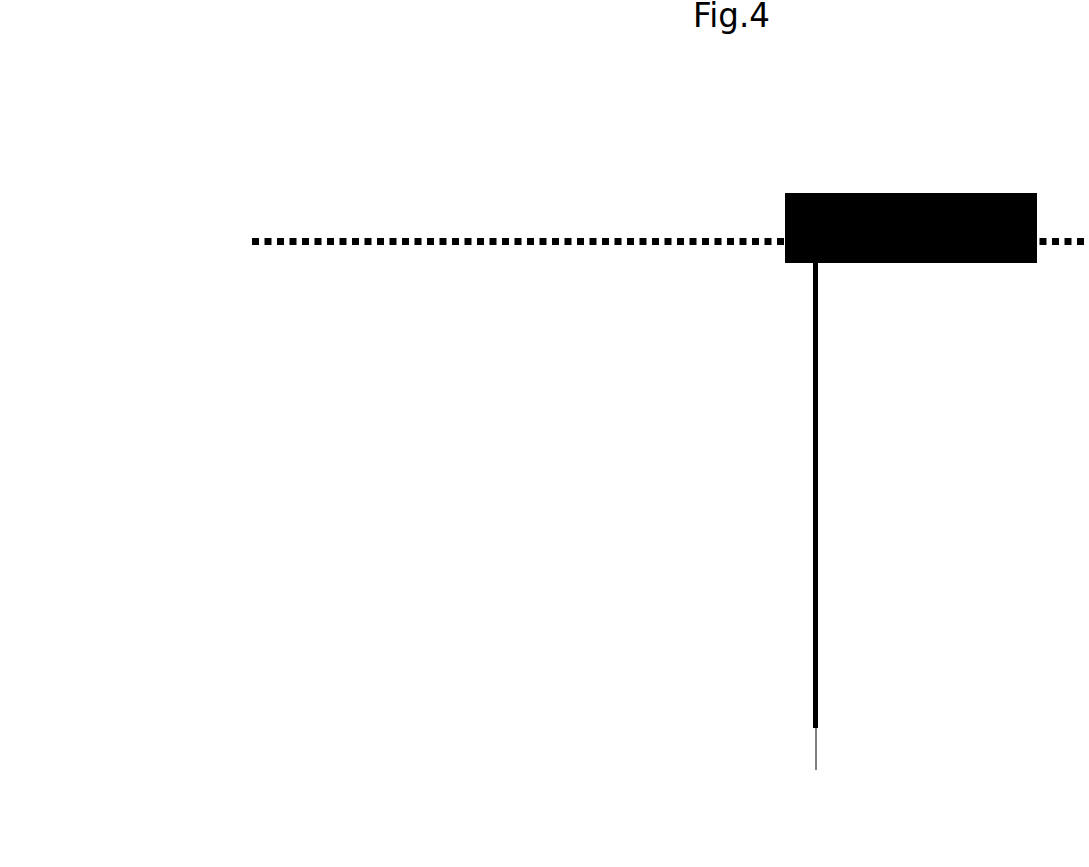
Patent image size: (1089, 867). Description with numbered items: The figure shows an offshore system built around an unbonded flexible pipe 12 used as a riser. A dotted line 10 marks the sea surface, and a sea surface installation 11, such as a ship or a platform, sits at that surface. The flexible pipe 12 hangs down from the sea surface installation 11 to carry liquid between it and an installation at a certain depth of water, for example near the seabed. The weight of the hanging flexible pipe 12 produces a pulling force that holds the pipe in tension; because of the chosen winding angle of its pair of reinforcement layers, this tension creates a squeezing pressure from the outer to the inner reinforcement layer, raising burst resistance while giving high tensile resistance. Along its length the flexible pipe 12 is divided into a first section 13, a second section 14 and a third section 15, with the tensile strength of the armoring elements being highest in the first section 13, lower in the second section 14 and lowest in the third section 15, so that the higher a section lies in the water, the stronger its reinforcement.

The dotted line 10 is at (413, 220).
The sea surface installation 11 is at (1002, 193).
The unbonded flexible pipe 12 is at (787, 430).
The first section 13 is at (822, 266).
The second section 14 is at (822, 455).
The third section 15 is at (822, 630).